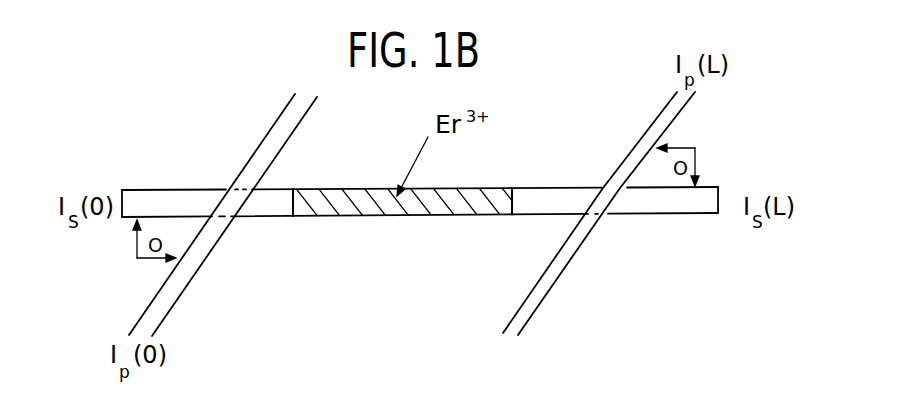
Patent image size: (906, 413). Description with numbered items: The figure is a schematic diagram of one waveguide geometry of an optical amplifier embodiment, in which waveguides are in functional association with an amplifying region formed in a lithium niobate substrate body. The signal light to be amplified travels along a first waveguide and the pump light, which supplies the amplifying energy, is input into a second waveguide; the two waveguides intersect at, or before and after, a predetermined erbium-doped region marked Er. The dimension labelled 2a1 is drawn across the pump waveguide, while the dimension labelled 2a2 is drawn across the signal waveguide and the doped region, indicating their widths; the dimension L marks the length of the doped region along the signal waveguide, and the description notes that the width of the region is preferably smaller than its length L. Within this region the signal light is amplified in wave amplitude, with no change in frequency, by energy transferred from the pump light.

The pump fiber core diameter 2a1 is at (260, 82).
The erbium-doped waveguide core diameter 2a2 is at (341, 245).
The length of erbium-doped section L is at (511, 248).